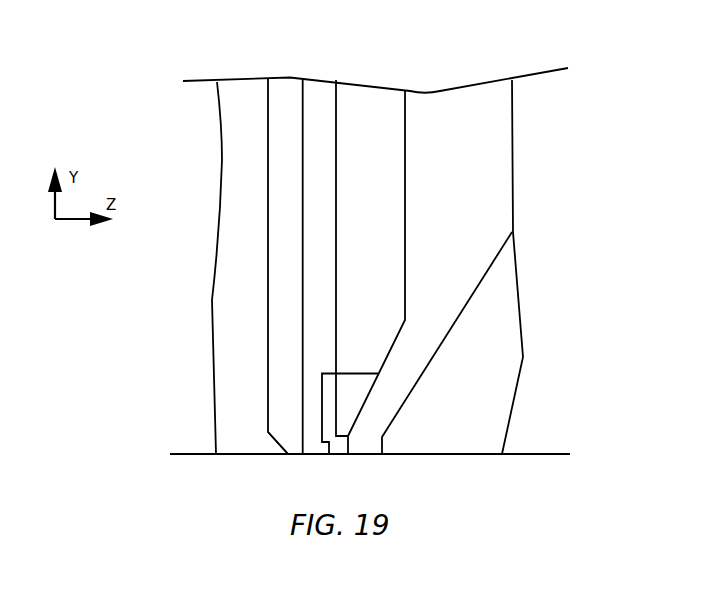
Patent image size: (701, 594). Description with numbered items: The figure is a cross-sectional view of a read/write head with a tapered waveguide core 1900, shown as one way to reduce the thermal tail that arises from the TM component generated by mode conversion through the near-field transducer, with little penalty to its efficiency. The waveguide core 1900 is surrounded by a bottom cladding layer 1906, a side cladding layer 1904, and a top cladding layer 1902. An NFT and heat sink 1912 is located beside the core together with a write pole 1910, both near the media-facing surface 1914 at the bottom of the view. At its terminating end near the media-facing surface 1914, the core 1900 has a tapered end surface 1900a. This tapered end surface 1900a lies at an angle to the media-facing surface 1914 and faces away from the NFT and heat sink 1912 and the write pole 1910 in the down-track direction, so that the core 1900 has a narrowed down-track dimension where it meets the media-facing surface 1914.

The waveguide core 1900 is at (284, 84).
The tapered end surface 1900a is at (283, 453).
The top cladding layer 1902 is at (386, 99).
The side cladding layer 1904 is at (326, 84).
The bottom cladding layer 1906 is at (243, 90).
The write pole 1910 is at (370, 445).
The NFT and heat sink 1912 is at (345, 378).
The media-facing surface 1914 is at (553, 455).